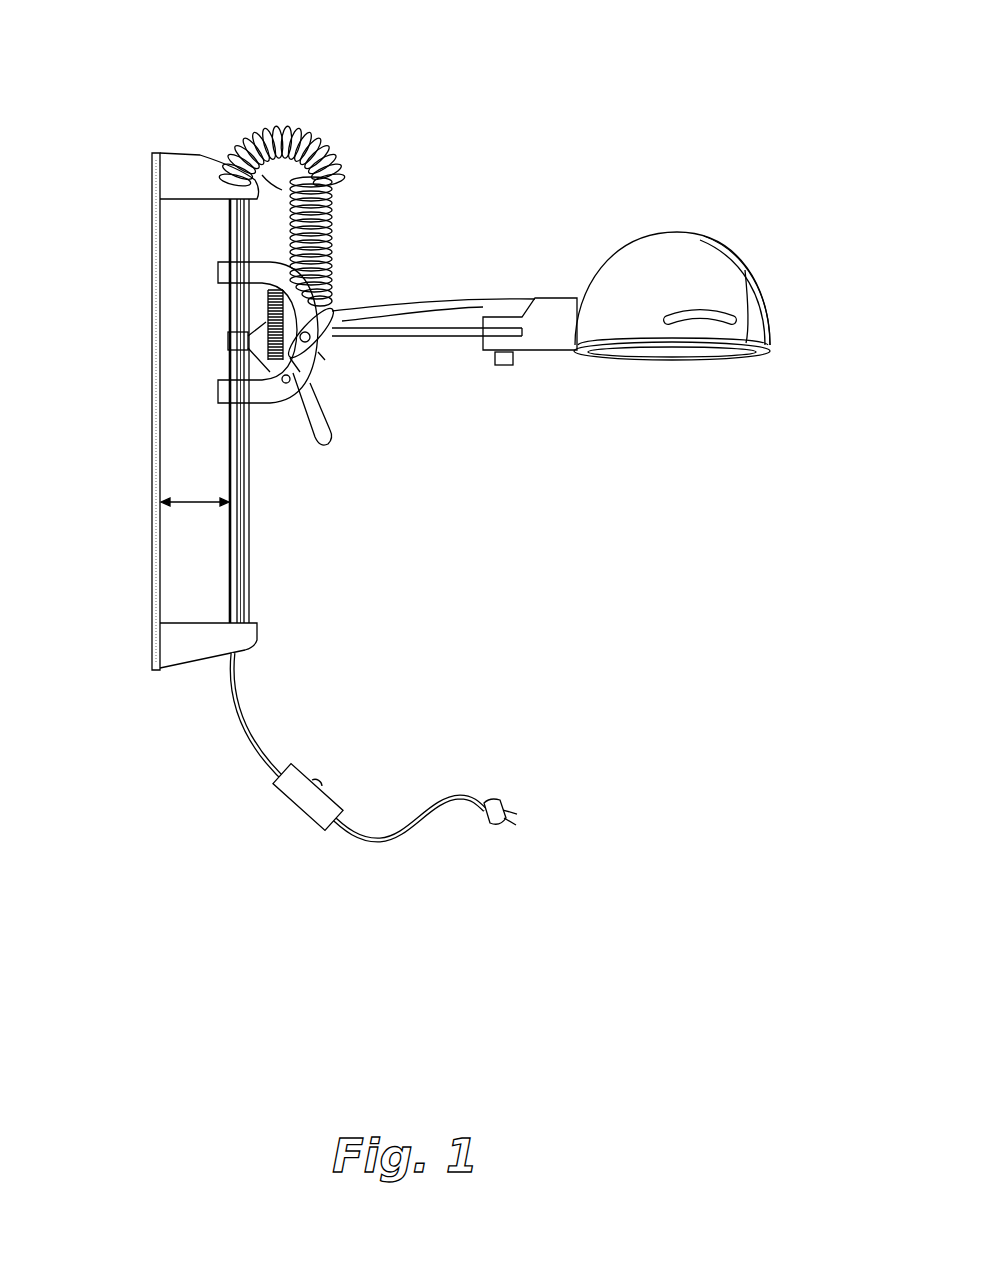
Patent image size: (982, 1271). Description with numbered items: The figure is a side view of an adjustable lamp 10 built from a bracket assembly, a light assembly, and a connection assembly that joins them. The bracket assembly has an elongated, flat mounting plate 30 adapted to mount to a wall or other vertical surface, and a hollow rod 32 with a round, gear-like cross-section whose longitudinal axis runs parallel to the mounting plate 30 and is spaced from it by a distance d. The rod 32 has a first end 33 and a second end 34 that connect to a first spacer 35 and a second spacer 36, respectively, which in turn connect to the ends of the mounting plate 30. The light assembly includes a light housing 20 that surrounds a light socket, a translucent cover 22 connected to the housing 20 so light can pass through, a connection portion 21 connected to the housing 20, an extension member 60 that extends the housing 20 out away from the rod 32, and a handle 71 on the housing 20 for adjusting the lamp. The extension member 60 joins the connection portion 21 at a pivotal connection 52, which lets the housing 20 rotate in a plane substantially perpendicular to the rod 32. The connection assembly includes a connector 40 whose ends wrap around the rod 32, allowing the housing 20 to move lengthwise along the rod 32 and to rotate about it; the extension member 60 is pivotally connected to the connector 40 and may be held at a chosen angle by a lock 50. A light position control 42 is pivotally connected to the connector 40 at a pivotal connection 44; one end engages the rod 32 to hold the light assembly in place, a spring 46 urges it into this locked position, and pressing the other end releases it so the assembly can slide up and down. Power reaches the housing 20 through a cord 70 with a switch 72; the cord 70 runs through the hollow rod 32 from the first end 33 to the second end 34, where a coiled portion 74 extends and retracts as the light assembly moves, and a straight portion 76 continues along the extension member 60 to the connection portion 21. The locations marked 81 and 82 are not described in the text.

The adjustable lamp 10 is at (687, 153).
The light housing 20 is at (693, 333).
The connection portion 21 is at (553, 297).
The translucent cover 22 is at (690, 354).
The mounting plate 30 is at (150, 310).
The rod 32 is at (253, 533).
The first end 33 is at (240, 610).
The second end 34 is at (320, 163).
The first spacer 35 is at (200, 648).
The second spacer 36 is at (187, 160).
The connector 40 is at (237, 393).
The light position control 42 is at (328, 443).
The pivotal connection 44 is at (296, 383).
The spring 46 is at (233, 322).
The lock 50 is at (333, 308).
The pivotal connection 52 is at (499, 367).
The extension member 60 is at (445, 338).
The cord 70 is at (415, 825).
The handle 71 is at (730, 317).
The switch 72 is at (305, 796).
The coiled portion 74 is at (323, 157).
The straight portion 76 is at (470, 297).
The lower mounting hole 81 is at (152, 665).
The upper mounting hole 82 is at (150, 168).